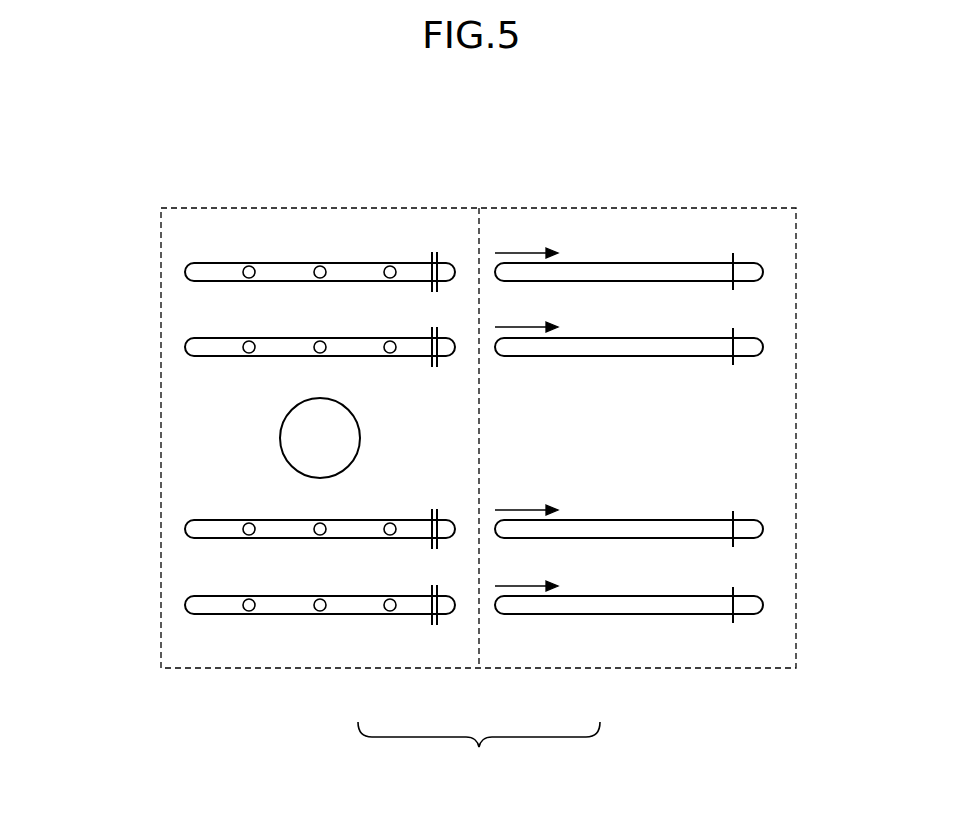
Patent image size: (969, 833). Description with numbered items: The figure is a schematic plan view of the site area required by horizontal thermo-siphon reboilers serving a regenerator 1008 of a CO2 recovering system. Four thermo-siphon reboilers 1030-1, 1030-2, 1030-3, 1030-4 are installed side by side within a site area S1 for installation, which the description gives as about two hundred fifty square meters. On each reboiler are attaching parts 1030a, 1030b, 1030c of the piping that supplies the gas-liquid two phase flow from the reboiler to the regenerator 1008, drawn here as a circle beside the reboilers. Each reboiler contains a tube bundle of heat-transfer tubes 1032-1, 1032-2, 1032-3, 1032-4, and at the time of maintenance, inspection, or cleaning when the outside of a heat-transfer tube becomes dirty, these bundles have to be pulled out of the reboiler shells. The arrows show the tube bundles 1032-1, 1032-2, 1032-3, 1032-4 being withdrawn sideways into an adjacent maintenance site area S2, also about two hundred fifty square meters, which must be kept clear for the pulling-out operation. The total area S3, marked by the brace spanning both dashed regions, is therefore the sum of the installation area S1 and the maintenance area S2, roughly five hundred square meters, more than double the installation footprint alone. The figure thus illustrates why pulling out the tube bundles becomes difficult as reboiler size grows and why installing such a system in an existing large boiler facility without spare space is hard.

The thermo-siphon reboiler 1030-1 is at (334, 210).
The thermo-siphon reboiler 1030-2 is at (184, 346).
The thermo-siphon reboiler 1030-3 is at (184, 529).
The thermo-siphon reboiler 1030-4 is at (184, 604).
The attaching part of piping 1030a is at (247, 264).
The attaching part of piping 1030b is at (319, 264).
The attaching part of piping 1030c is at (390, 264).
The regenerator 1008 is at (280, 436).
The heat-transfer tube 1032-1 is at (604, 268).
The heat-transfer tube 1032-2 is at (722, 345).
The heat-transfer tube 1032-3 is at (720, 527).
The heat-transfer tube 1032-4 is at (720, 602).
The site area for installation S1 is at (375, 668).
The maintenance site area S2 is at (578, 668).
The total area S3 is at (479, 750).